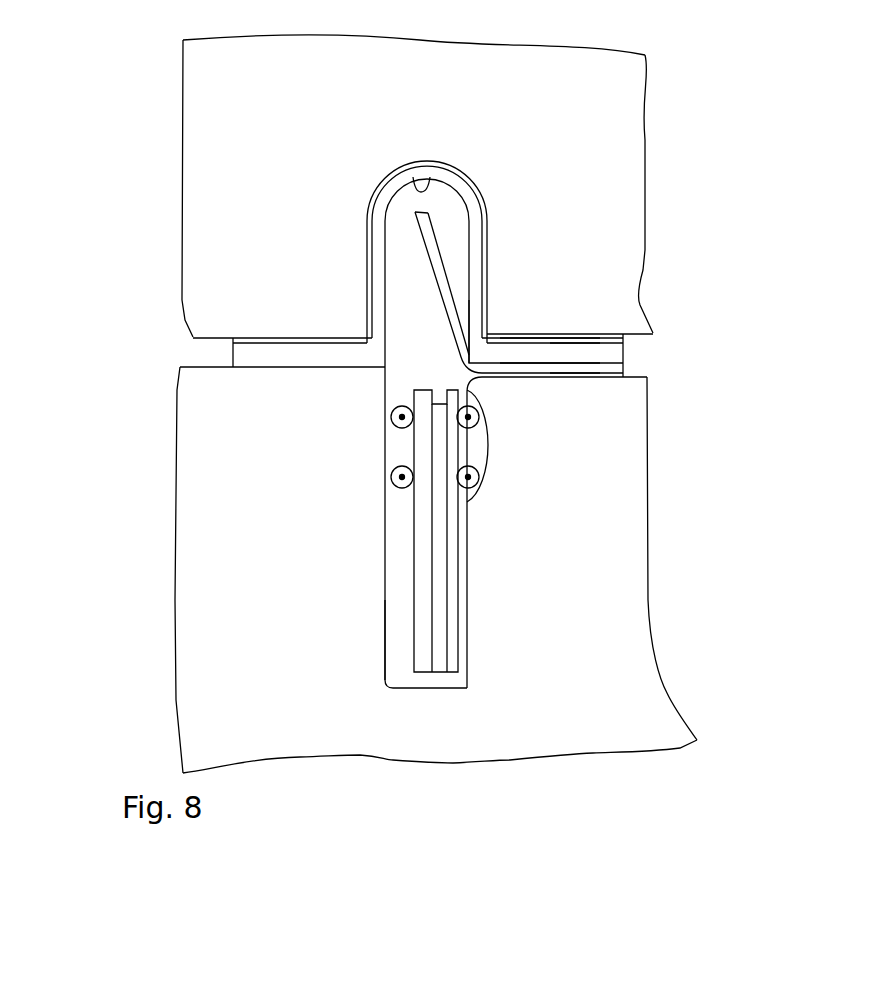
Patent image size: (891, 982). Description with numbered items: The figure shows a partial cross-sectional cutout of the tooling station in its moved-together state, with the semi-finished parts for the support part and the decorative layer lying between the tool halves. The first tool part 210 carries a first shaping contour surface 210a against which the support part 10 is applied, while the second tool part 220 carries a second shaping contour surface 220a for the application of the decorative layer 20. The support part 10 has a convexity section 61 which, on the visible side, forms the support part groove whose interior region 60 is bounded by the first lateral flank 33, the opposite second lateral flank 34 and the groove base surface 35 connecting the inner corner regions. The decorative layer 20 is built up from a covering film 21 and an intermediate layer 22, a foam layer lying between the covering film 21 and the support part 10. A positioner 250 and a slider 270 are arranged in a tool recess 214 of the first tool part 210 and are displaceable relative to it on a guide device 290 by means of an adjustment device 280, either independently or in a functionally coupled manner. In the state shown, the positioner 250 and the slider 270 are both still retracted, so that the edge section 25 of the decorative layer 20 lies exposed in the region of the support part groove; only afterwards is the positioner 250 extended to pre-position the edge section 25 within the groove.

The support part 10 is at (613, 352).
The decorative layer 20 is at (747, 360).
The covering film 21 is at (623, 373).
The intermediate layer 22 is at (625, 362).
The edge section 25 is at (452, 203).
The first lateral flank 33 is at (468, 282).
The second lateral flank 34 is at (388, 276).
The groove base surface 35 is at (421, 185).
The interior region 60 is at (399, 332).
The convexity section 61 is at (379, 180).
The first tool part 210 is at (637, 70).
The first shaping contour surface 210a is at (207, 343).
The tool recess 214 is at (395, 627).
The second tool part 220 is at (627, 567).
The second shaping contour surface 220a is at (210, 366).
The positioner 250 is at (422, 551).
The slider 270 is at (456, 663).
The adjustment device 280 is at (472, 445).
The guide device 290 is at (438, 665).